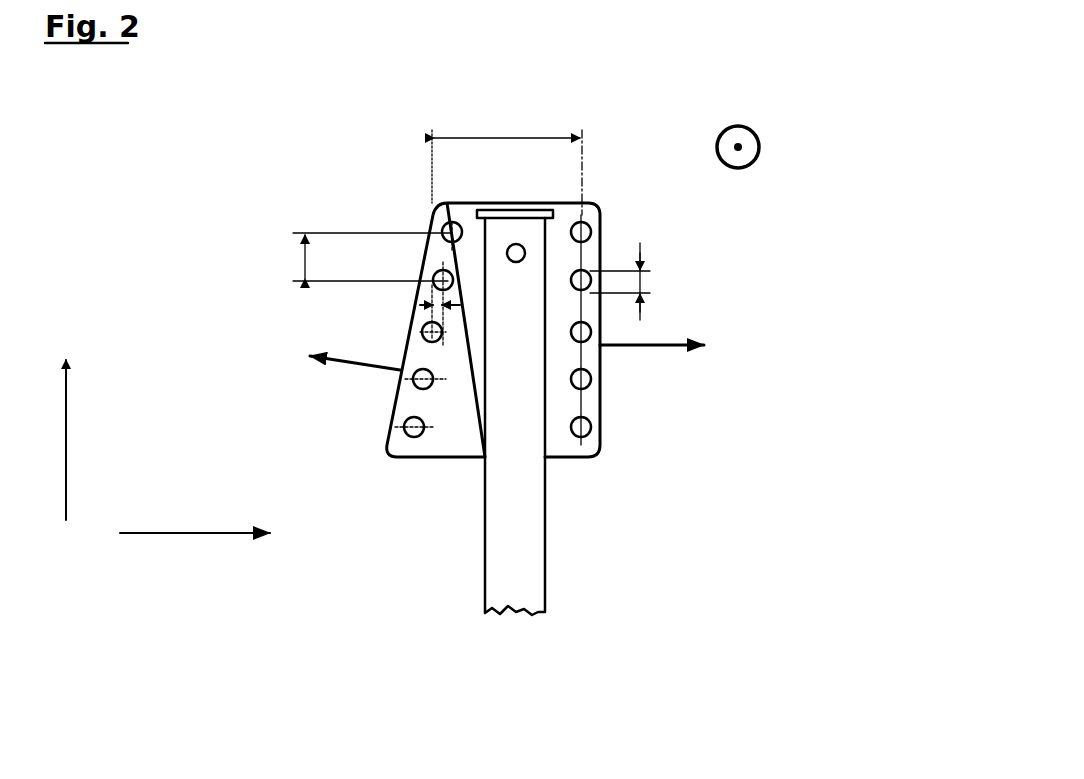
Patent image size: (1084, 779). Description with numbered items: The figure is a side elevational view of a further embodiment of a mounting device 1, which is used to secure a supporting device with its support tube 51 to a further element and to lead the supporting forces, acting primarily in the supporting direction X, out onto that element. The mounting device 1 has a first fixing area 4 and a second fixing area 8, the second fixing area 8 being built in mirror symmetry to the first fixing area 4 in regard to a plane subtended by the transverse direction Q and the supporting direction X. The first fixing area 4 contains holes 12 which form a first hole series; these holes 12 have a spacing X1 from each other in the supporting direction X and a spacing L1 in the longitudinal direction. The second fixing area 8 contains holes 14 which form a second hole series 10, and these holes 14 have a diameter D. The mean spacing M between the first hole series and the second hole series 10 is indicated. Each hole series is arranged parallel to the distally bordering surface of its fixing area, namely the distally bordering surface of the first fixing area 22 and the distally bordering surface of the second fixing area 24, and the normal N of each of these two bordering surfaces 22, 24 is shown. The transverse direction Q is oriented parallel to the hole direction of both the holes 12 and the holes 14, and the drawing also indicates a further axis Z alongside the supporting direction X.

The mounting device 1 is at (393, 186).
The first fixing area 4 is at (452, 428).
The second fixing area 8 is at (580, 580).
The second hole series 10 is at (582, 308).
The holes 12 is at (410, 430).
The holes 14 is at (590, 430).
The distally bordering surface of the first fixing area 22 is at (392, 408).
The distally bordering surface of the second fixing area 24 is at (600, 395).
The support tube 51 is at (498, 510).
The mean spacing M is at (538, 138).
The diameter D is at (640, 248).
The transverse direction Q is at (760, 147).
The normal N is at (808, 448).
The supporting direction X is at (66, 452).
The Z axis Z is at (200, 592).
The spacing in the supporting direction X1 is at (300, 253).
The spacing in the longitudinal direction L1 is at (420, 305).